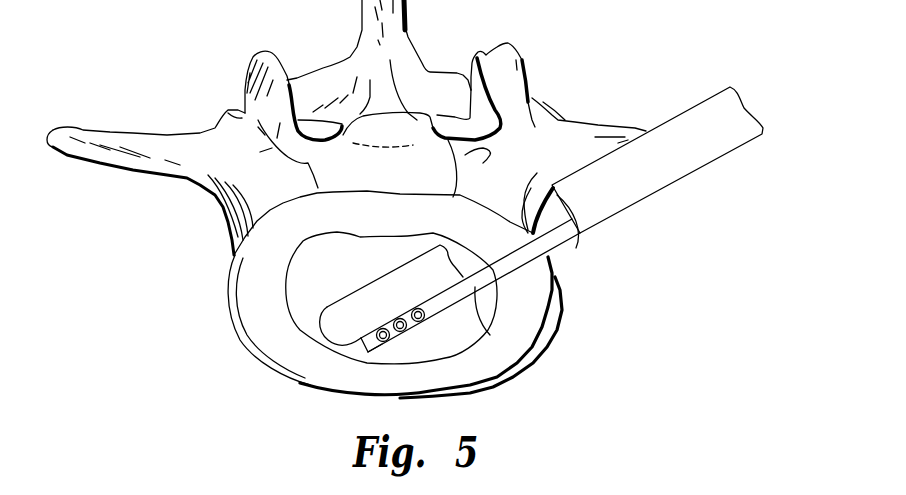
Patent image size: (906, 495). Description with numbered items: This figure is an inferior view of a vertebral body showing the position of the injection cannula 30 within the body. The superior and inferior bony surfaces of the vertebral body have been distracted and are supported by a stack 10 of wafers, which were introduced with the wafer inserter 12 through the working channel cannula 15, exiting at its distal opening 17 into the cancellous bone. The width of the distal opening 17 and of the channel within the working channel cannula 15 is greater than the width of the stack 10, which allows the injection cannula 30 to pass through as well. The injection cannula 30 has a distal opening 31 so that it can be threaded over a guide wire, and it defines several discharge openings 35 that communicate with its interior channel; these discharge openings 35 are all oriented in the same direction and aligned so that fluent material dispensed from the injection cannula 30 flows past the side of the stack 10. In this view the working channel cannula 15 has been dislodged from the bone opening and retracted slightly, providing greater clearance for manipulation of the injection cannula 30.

The stack 10 is at (358, 305).
The wafer inserter 12 is at (328, 332).
The working channel cannula 15 is at (693, 128).
The distal opening 17 is at (578, 243).
The injection cannula 30 is at (490, 335).
The distal opening 31 is at (362, 352).
The discharge openings 35 is at (421, 322).